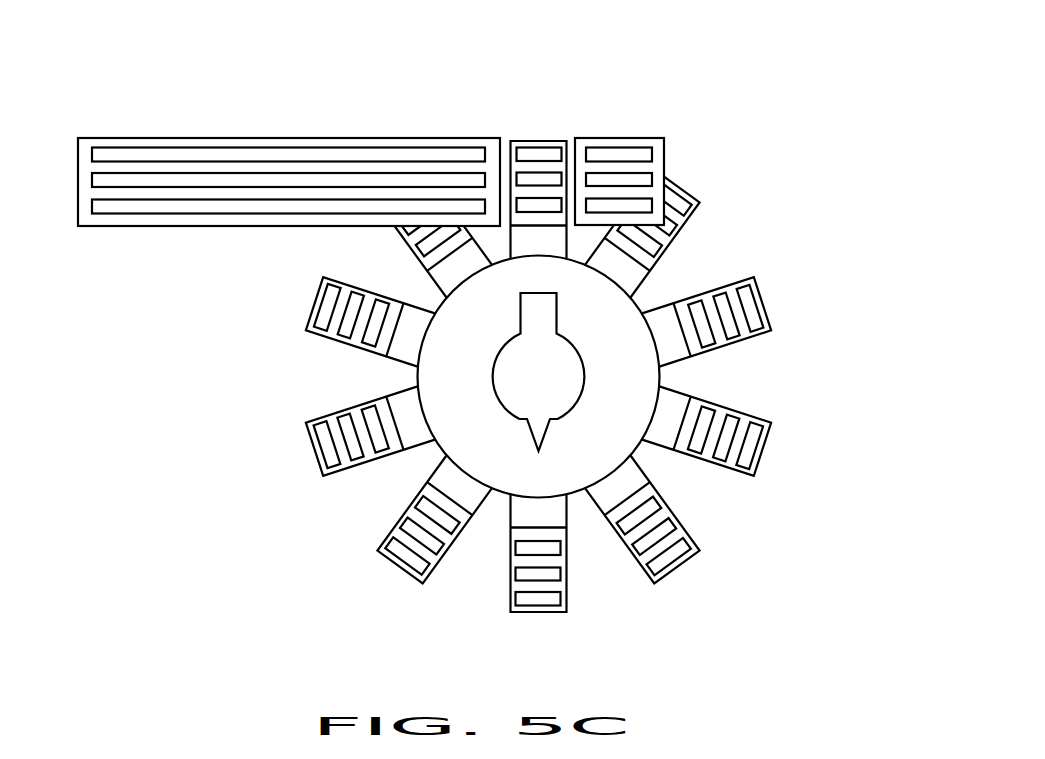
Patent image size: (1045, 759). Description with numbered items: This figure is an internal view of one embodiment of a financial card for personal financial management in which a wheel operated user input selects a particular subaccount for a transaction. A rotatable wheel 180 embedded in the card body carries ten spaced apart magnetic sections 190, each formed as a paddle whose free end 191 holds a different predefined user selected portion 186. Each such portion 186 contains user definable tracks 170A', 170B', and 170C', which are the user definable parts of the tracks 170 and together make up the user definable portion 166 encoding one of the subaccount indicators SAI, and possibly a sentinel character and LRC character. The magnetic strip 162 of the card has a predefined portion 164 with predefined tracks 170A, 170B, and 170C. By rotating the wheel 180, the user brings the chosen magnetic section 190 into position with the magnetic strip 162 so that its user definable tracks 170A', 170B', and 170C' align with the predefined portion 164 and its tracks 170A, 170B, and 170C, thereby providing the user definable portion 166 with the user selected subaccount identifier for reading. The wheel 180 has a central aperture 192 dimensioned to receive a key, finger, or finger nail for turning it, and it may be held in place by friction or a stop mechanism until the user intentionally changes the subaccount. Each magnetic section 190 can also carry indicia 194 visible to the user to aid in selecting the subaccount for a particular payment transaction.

The magnetic strip 162 is at (267, 152).
The predefined portion 164 is at (215, 143).
The tracks 170 is at (288, 146).
The user definable portion 166 is at (525, 141).
The predefined user selected portion 186 is at (508, 141).
The track 170A is at (704, 167).
The track 170B is at (718, 160).
The track 170C is at (711, 188).
The user definable track 170A' is at (718, 271).
The user definable track 170B' is at (705, 268).
The user definable track 170C' is at (780, 403).
The wheel 180 is at (599, 305).
The aperture 192 is at (562, 370).
The magnetic section 190 is at (673, 535).
The end 191 is at (403, 570).
The indicia 194 is at (455, 532).